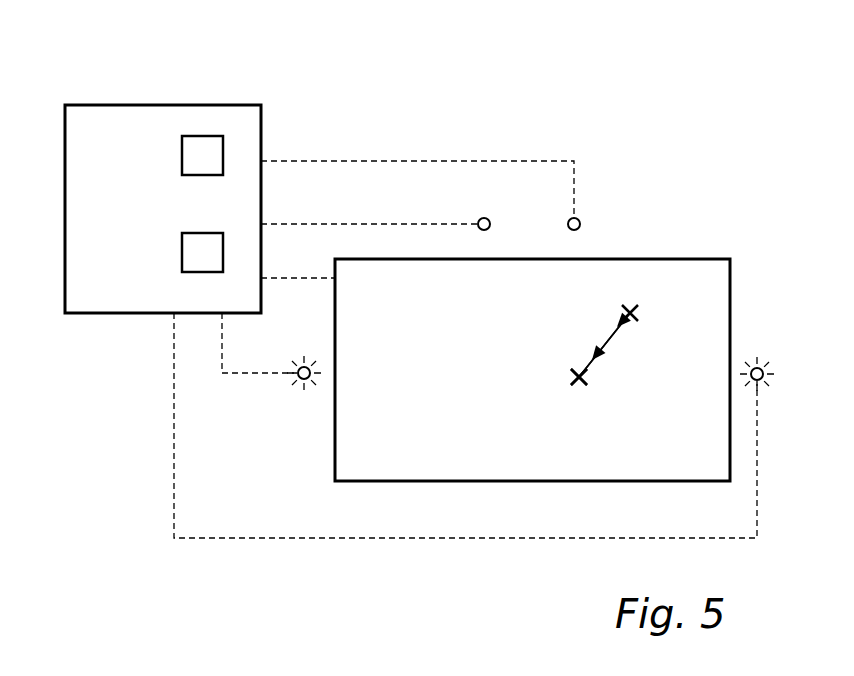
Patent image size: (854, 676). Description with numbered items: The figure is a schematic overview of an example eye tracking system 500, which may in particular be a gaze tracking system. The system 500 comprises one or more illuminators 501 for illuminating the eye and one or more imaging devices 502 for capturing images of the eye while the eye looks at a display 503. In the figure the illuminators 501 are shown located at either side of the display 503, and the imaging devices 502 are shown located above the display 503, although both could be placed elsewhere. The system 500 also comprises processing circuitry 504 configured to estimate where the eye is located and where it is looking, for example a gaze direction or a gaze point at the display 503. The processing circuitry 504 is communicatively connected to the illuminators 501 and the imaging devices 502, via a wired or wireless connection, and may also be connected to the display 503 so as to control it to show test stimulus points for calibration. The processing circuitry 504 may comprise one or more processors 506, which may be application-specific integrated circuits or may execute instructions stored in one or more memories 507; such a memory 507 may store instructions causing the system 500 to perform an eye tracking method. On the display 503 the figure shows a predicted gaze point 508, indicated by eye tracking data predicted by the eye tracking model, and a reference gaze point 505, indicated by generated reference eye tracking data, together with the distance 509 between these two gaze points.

The eye tracking system 500 is at (117, 488).
The illuminators 501 is at (302, 381).
The imaging devices 502 is at (484, 217).
The display 503 is at (733, 276).
The processing circuitry 504 is at (178, 104).
The reference gaze point 505 is at (632, 308).
The processors 506 is at (211, 136).
The memories 507 is at (182, 253).
The predicted gaze point 508 is at (579, 380).
The distance 509 is at (603, 345).